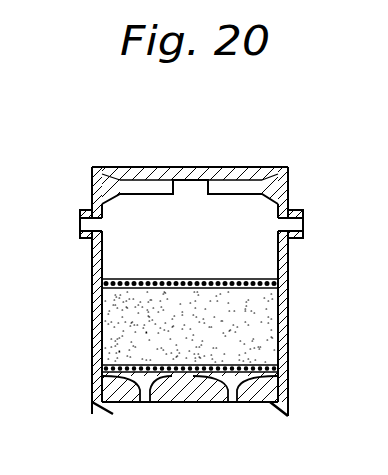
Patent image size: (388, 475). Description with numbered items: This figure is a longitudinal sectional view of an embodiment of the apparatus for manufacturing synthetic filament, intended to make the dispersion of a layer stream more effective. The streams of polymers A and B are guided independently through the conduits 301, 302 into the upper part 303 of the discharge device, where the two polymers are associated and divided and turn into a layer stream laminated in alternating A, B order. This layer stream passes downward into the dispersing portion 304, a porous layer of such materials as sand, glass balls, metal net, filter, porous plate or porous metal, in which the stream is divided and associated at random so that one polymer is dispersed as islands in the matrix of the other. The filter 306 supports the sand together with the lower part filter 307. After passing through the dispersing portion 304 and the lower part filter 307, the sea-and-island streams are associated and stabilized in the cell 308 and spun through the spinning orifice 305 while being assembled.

The conduit 301 is at (80, 223).
The conduit 302 is at (303, 224).
The upper part of the discharge device 303 is at (271, 259).
The dispersing portion 304 is at (270, 310).
The spinning orifice 305 is at (233, 402).
The filter 306 is at (102, 280).
The lower part filter 307 is at (105, 367).
The cell 308 is at (104, 389).